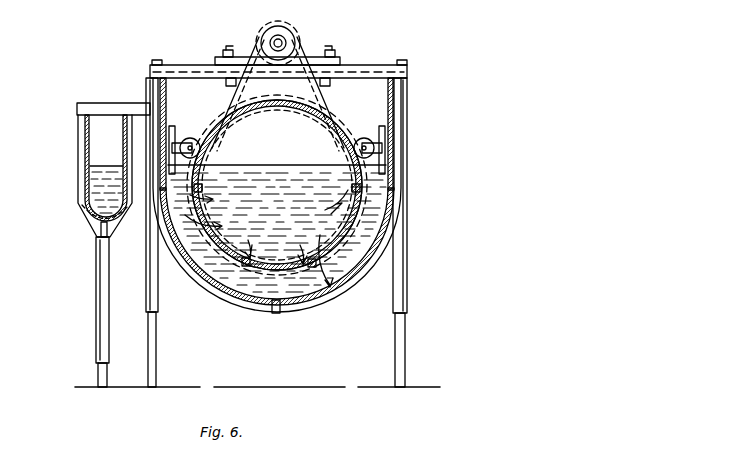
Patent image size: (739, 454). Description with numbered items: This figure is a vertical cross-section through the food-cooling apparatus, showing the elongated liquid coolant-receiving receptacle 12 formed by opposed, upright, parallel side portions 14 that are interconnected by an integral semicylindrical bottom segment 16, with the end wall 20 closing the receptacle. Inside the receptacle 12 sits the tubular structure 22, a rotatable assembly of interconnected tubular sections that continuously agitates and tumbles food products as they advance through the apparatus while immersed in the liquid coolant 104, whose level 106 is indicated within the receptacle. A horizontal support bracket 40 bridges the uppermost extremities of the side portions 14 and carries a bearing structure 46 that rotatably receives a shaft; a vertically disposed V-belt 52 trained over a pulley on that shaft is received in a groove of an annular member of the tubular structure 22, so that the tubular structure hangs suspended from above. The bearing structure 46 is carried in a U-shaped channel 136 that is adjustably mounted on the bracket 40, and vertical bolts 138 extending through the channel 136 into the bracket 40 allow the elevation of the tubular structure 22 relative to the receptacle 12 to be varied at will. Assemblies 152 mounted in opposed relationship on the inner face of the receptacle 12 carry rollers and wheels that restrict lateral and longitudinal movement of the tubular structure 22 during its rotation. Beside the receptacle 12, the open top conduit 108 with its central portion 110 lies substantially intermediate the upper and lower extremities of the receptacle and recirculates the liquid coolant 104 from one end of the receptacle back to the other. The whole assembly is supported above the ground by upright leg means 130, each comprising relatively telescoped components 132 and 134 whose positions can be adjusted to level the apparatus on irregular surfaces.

The liquid coolant-receiving receptacle 12 is at (310, 314).
The side portions 14 is at (167, 103).
The semicylindrical bottom segment 16 is at (236, 300).
The end wall 20 is at (372, 123).
The tubular structure 22 is at (237, 132).
The support brackets 40 is at (387, 73).
The bearing structure 46 is at (290, 42).
The V-belt 52 is at (333, 112).
The liquid coolant 104 is at (373, 212).
The level 106 is at (258, 165).
The open top conduit 108 is at (75, 153).
The central portion 110 is at (80, 185).
The leg means 130 is at (93, 302).
The telescoped component 132 is at (397, 348).
The telescoped component 134 is at (403, 277).
The U-shaped channel 136 is at (340, 65).
The vertical bolts 138 is at (228, 50).
The assemblies 152 is at (183, 135).